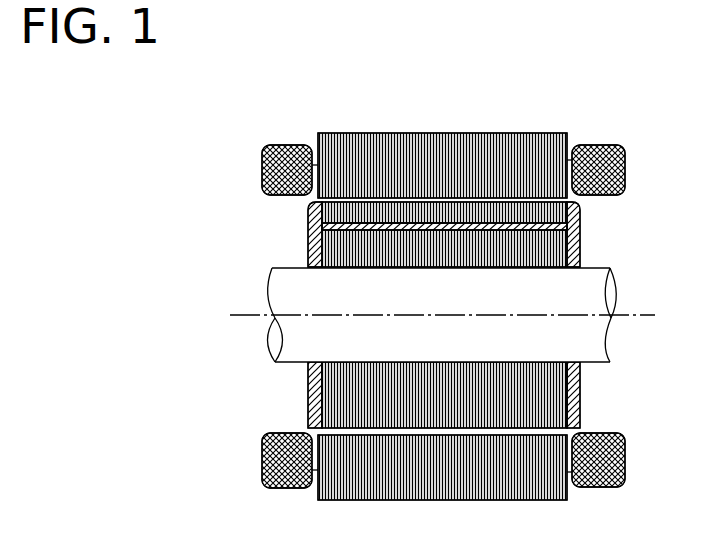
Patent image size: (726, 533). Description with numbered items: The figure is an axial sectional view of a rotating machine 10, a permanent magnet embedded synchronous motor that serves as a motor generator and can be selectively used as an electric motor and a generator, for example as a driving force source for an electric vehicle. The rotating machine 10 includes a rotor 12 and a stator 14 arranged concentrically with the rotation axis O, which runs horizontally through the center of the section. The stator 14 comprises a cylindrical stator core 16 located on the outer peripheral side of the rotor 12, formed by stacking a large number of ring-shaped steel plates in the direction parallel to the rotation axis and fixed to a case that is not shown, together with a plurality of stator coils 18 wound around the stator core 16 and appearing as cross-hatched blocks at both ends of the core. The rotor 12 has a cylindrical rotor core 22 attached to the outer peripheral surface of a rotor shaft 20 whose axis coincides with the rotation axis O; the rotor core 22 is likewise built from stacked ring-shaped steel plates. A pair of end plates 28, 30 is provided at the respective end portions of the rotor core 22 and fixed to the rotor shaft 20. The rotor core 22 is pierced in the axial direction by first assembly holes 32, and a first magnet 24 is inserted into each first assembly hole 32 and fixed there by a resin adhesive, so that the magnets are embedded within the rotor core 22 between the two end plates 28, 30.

The rotating machine 10 is at (592, 96).
The rotor 12 is at (421, 274).
The stator 14 is at (443, 283).
The stator core 16 is at (492, 176).
The stator coil 18 is at (276, 170).
The rotor shaft 20 is at (588, 283).
The rotor core 22 is at (471, 406).
The first magnet 24 is at (423, 228).
The end plate 28 is at (316, 239).
The end plate 30 is at (580, 389).
The first assembly hole 32 is at (358, 228).